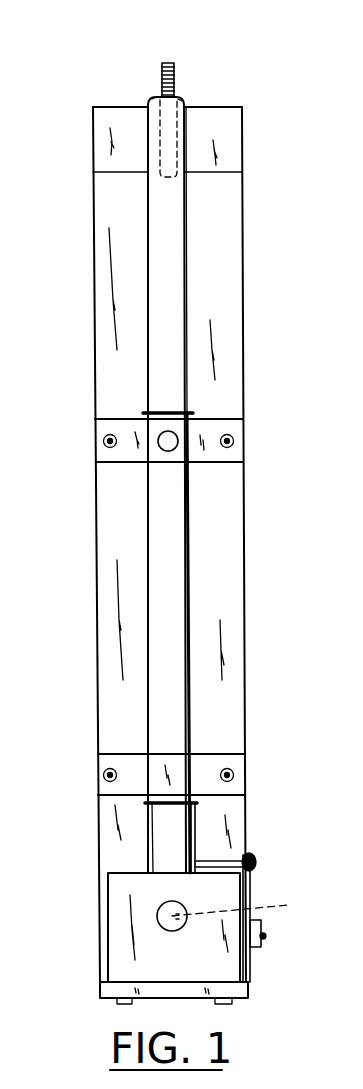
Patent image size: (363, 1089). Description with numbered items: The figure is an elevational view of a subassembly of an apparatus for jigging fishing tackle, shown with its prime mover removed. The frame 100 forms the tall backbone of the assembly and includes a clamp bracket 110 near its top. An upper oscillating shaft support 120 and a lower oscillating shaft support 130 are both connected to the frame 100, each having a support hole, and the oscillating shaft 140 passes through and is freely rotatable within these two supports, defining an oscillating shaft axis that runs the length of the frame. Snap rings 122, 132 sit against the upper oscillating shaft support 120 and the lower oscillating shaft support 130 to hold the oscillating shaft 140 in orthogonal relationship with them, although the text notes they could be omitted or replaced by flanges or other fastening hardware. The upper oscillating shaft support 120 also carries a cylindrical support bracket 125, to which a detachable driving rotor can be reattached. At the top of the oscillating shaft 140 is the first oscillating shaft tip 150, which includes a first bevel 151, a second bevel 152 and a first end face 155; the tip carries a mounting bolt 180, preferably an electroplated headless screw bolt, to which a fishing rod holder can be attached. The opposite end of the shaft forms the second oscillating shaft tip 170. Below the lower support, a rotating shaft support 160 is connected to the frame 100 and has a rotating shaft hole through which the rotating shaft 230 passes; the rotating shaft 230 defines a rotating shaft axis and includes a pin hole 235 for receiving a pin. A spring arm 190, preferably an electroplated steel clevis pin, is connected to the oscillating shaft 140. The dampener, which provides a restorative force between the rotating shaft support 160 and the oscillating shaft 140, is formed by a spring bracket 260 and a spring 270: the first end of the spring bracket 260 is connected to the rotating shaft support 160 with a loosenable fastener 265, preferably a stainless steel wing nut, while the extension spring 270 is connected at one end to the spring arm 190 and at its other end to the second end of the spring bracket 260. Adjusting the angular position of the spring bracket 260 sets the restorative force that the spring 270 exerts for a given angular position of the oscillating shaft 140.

The frame 100 is at (222, 665).
The clamp bracket 110 is at (214, 157).
The upper oscillating shaft support 120 is at (97, 455).
The snap ring 122 is at (193, 413).
The cylindrical support bracket 125 is at (160, 447).
The lower oscillating shaft support 130 is at (110, 763).
The snap ring 132 is at (200, 803).
The oscillating shaft 140 is at (189, 593).
The first oscillating shaft tip 150 is at (184, 118).
The first bevel 151 is at (152, 98).
The second bevel 152 is at (182, 100).
The first end face 155 is at (157, 97).
The rotating shaft support 160 is at (132, 932).
The second oscillating shaft tip 170 is at (160, 818).
The mounting bolt 180 is at (164, 63).
The spring arm 190 is at (212, 863).
The rotating shaft 230 is at (165, 909).
The pin hole 235 is at (252, 905).
The spring bracket 260 is at (250, 887).
The loosenable fastener 265 is at (256, 948).
The spring 270 is at (256, 862).